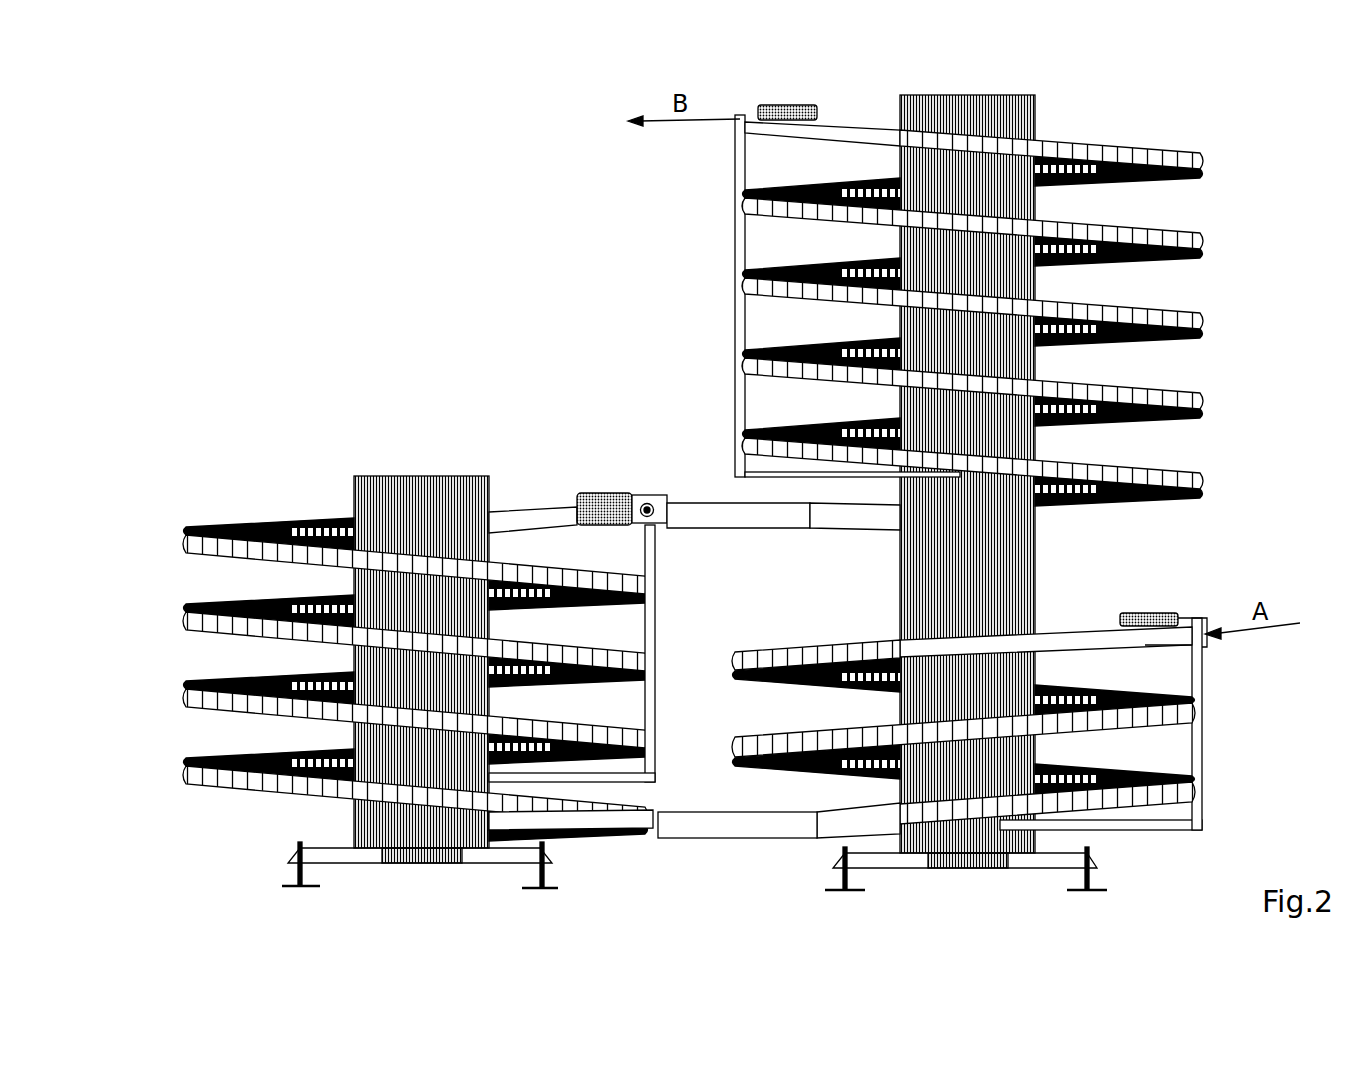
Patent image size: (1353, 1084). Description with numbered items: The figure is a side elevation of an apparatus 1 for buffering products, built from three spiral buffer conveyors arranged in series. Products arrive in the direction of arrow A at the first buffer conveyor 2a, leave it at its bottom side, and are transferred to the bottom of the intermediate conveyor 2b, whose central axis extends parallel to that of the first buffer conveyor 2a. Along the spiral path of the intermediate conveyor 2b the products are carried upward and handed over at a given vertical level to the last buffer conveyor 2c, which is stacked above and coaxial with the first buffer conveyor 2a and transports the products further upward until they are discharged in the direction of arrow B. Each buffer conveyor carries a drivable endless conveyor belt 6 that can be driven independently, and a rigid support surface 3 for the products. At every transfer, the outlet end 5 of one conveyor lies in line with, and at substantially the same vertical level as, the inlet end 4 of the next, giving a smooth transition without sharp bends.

The apparatus 1 is at (705, 508).
The first buffer conveyor 2a is at (1178, 799).
The intermediate conveyor 2b is at (381, 664).
The last buffer conveyor 2c is at (1200, 153).
The support surface 3 is at (222, 528).
The inlet end 4 is at (731, 512).
The outlet end 5 is at (533, 518).
The conveyor belt 6 is at (212, 607).